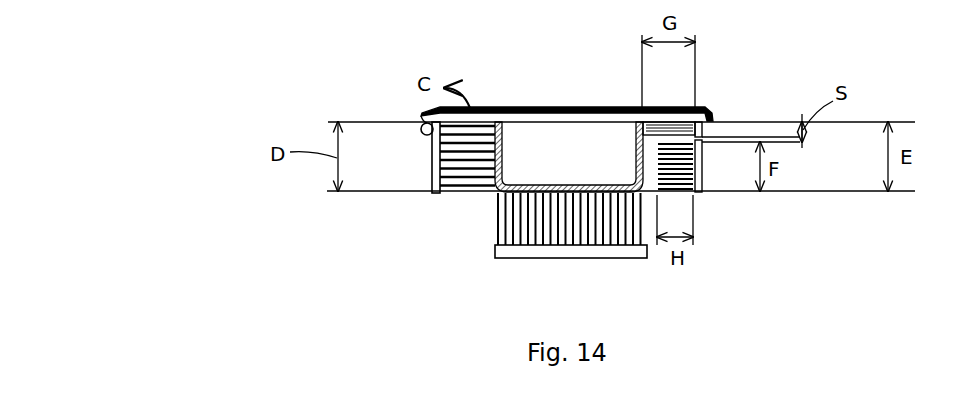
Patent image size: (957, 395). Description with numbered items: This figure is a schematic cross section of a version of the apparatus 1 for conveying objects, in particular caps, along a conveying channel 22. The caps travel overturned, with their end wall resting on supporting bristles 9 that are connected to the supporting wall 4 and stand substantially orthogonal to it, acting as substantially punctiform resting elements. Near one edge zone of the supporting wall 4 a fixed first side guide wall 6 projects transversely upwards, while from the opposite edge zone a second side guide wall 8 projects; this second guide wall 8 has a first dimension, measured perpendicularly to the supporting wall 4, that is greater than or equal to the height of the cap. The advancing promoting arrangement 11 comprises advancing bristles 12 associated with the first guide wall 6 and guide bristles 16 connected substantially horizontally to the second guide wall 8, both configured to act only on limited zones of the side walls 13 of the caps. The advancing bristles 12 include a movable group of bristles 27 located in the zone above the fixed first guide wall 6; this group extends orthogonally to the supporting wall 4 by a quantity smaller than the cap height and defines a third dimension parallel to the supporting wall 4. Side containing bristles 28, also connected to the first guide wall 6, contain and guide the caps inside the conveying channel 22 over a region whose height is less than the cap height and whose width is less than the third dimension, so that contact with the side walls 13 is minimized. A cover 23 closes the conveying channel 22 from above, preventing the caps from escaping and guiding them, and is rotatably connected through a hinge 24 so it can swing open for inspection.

The apparatus 1 is at (288, 88).
The supporting wall 4 is at (637, 250).
The first side guide wall 6 is at (698, 178).
The second side guide wall 8 is at (432, 170).
The supporting bristles 9 is at (533, 230).
The advancing promoting arrangement 11 is at (822, 60).
The advancing bristles 12 is at (675, 97).
The side walls 13 is at (638, 150).
The guide bristles 16 is at (488, 140).
The conveying channel 22 is at (458, 238).
The cover 23 is at (563, 107).
The hinge 24 is at (421, 125).
The group of bristles 27 is at (697, 108).
The side containing bristles 28 is at (696, 192).